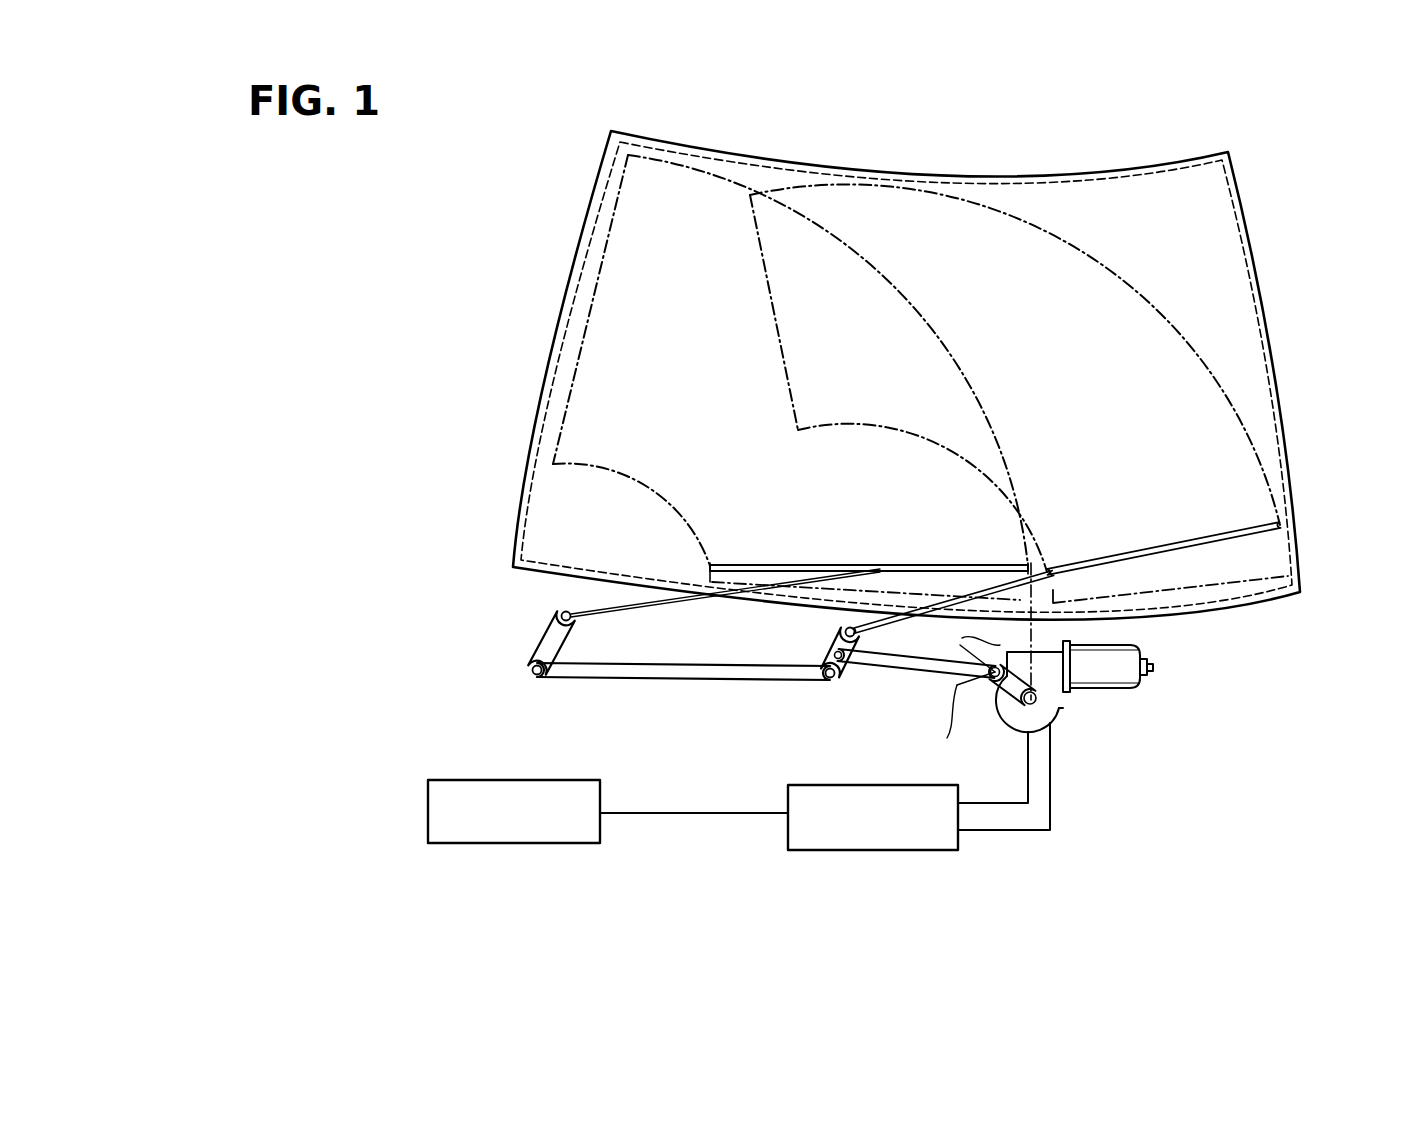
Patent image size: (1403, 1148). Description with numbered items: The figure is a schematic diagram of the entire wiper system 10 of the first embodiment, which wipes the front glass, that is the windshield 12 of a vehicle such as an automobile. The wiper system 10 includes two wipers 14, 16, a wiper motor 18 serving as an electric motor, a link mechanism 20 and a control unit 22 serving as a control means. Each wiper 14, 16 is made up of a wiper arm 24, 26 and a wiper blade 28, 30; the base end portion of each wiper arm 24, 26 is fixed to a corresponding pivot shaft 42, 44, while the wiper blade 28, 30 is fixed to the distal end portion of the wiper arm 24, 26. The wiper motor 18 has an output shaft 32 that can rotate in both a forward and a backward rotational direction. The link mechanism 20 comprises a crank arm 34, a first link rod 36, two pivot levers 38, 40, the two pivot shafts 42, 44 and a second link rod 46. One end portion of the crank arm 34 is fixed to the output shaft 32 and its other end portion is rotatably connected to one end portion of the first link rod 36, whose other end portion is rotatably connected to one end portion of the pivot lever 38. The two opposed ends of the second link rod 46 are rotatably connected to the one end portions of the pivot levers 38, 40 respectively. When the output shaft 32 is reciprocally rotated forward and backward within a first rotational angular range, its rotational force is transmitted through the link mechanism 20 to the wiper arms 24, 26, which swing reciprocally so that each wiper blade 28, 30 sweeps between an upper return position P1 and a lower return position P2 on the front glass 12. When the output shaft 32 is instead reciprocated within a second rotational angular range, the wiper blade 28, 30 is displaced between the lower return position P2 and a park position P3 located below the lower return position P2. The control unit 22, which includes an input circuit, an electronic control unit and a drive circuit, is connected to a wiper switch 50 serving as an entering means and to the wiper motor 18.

The wiper system 10 is at (1106, 842).
The windshield 12 is at (945, 178).
The wiper 14 is at (1212, 535).
The wiper 16 is at (960, 560).
The wiper motor 18 is at (1152, 668).
The link mechanism 20 is at (797, 680).
The control unit 22 is at (896, 851).
The wiper arm 24 is at (1037, 573).
The wiper arm 26 is at (776, 582).
The wiper blade 28 is at (1092, 562).
The wiper blade 30 is at (799, 548).
The output shaft 32 is at (1062, 710).
The crank arm 34 is at (1013, 728).
The first link rod 36 is at (928, 667).
The pivot lever 38 is at (824, 652).
The pivot lever 40 is at (546, 644).
The pivot shaft 42 is at (843, 632).
The pivot shaft 44 is at (560, 614).
The second link rod 46 is at (697, 680).
The wiper switch 50 is at (428, 812).
The upper return position P1 is at (592, 326).
The lower return position P2 is at (912, 580).
The park position P3 is at (1223, 575).